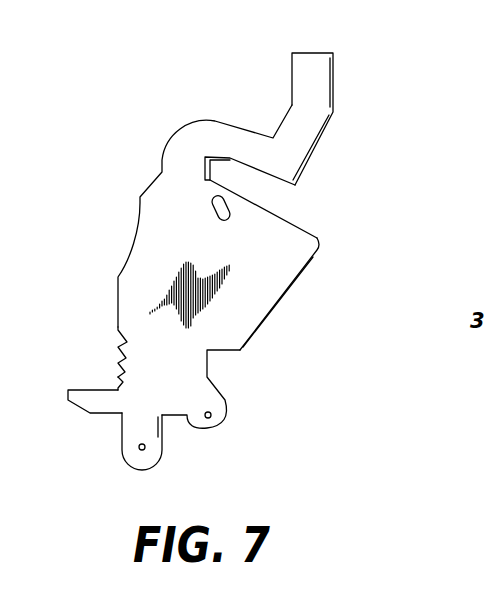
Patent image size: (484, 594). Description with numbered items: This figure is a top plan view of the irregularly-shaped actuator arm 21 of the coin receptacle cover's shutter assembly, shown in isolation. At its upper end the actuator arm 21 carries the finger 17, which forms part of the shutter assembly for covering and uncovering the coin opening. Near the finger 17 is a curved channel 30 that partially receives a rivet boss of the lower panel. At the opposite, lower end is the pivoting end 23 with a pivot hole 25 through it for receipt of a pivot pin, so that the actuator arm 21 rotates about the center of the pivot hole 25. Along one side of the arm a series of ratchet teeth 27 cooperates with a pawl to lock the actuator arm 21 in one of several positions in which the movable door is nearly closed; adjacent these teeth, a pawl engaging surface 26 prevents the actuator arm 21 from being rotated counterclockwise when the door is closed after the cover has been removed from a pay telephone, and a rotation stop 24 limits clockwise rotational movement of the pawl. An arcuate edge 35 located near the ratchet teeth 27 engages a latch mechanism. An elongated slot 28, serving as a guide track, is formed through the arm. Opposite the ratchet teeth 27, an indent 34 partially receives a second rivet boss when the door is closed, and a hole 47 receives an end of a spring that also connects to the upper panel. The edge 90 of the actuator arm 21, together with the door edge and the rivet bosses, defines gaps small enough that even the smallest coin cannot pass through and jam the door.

The actuator arm 21 is at (183, 82).
The finger 17 is at (320, 80).
The curved channel 30 is at (243, 178).
The edge 90 is at (280, 310).
The indent 34 is at (220, 362).
The hole 47 is at (213, 415).
The pivoting end 23 is at (148, 457).
The pivot hole 25 is at (140, 450).
The rotation stop 24 is at (92, 403).
The pawl engaging surface 26 is at (118, 385).
The ratchet teeth 27 is at (108, 352).
The arcuate edge 35 is at (122, 240).
The elongated slot 28 is at (228, 207).